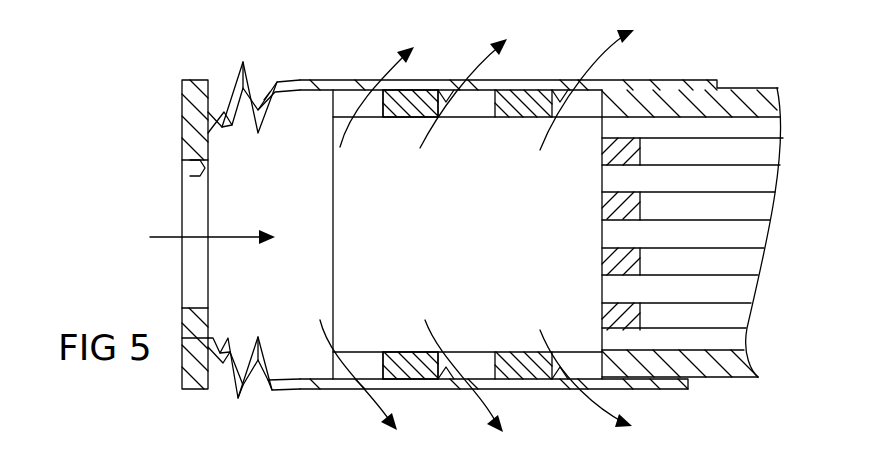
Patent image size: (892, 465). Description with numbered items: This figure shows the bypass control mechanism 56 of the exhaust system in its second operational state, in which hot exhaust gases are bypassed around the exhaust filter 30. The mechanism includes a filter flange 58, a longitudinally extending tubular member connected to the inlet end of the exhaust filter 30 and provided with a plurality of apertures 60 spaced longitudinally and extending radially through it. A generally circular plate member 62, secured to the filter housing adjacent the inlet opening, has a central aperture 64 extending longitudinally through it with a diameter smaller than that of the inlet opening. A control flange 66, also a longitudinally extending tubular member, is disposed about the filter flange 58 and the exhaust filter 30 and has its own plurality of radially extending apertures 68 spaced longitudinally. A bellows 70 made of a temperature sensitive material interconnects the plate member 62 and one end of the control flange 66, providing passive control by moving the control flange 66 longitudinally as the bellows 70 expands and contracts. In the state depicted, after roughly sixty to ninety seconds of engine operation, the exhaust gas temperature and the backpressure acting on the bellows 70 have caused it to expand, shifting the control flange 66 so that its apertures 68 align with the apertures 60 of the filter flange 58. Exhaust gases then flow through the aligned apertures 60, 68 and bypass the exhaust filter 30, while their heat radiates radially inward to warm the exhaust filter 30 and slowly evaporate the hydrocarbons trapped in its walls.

The exhaust filter 30 is at (786, 90).
The bypass control mechanism 56 is at (262, 76).
The filter flange 58 is at (410, 100).
The apertures 60 is at (420, 150).
The plate member 62 is at (192, 114).
The central aperture 64 is at (185, 177).
The control flange 66 is at (415, 383).
The apertures 68 is at (490, 78).
The bellows 70 is at (245, 395).